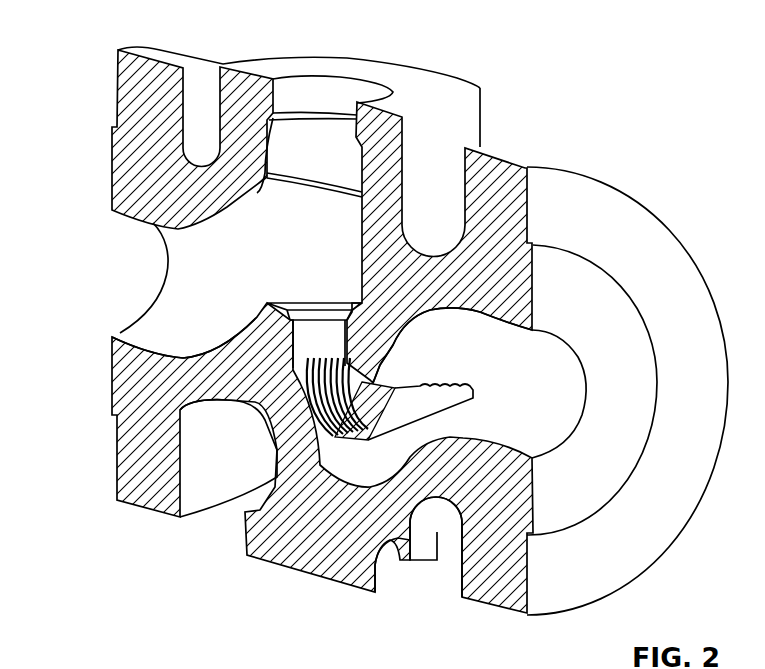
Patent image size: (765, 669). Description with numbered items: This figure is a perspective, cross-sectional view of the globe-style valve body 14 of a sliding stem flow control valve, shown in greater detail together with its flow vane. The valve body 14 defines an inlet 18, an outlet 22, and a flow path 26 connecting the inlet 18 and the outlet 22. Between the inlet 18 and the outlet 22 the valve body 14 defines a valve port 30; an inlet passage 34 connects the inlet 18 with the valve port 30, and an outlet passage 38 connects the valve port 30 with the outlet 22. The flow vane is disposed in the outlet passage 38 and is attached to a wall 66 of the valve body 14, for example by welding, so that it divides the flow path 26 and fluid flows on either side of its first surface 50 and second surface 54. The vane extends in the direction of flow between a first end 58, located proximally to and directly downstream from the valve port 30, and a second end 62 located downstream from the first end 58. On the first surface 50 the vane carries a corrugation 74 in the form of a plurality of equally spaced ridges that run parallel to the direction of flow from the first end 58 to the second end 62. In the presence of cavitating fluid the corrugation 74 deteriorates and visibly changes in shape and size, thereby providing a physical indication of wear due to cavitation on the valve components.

The valve body 14 is at (507, 177).
The inlet 18 is at (136, 233).
The outlet 22 is at (560, 402).
The flow path 26 is at (250, 286).
The valve port 30 is at (306, 328).
The inlet passage 34 is at (262, 190).
The outlet passage 38 is at (378, 458).
The first surface 50 is at (275, 478).
The second surface 54 is at (397, 430).
The first end 58 is at (320, 347).
The second end 62 is at (455, 384).
The wall 66 is at (452, 352).
The corrugation 74 is at (313, 363).